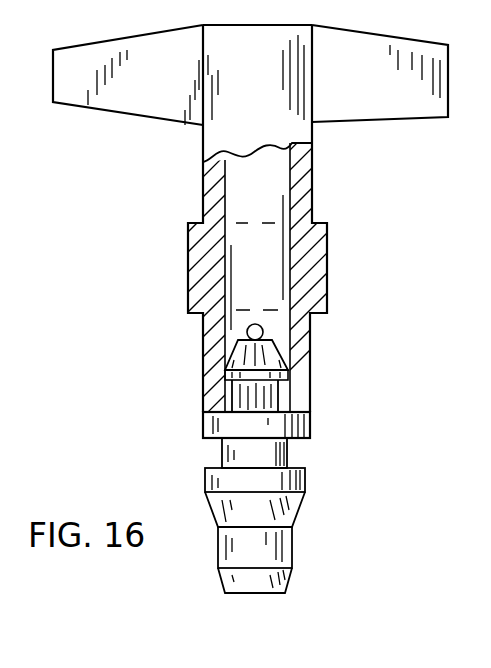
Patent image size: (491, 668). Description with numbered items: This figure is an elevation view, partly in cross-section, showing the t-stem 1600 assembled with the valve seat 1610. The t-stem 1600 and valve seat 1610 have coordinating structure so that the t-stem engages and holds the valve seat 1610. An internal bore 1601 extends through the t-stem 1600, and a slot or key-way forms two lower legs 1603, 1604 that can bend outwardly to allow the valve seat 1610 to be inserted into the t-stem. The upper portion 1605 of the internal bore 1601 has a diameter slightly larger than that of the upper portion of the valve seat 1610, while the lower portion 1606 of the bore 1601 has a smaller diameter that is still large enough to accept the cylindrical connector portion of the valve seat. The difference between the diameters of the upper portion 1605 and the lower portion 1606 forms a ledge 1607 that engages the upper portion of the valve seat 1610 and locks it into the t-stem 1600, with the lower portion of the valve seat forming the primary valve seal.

The t-stem 1600 is at (340, 189).
The internal bore 1601 is at (262, 192).
The lower leg 1603 is at (296, 405).
The lower leg 1604 is at (229, 398).
The upper portion of the internal bore 1605 is at (232, 179).
The lower portion of the bore 1606 is at (235, 386).
The ledge 1607 is at (291, 388).
The valve seat 1610 is at (332, 517).